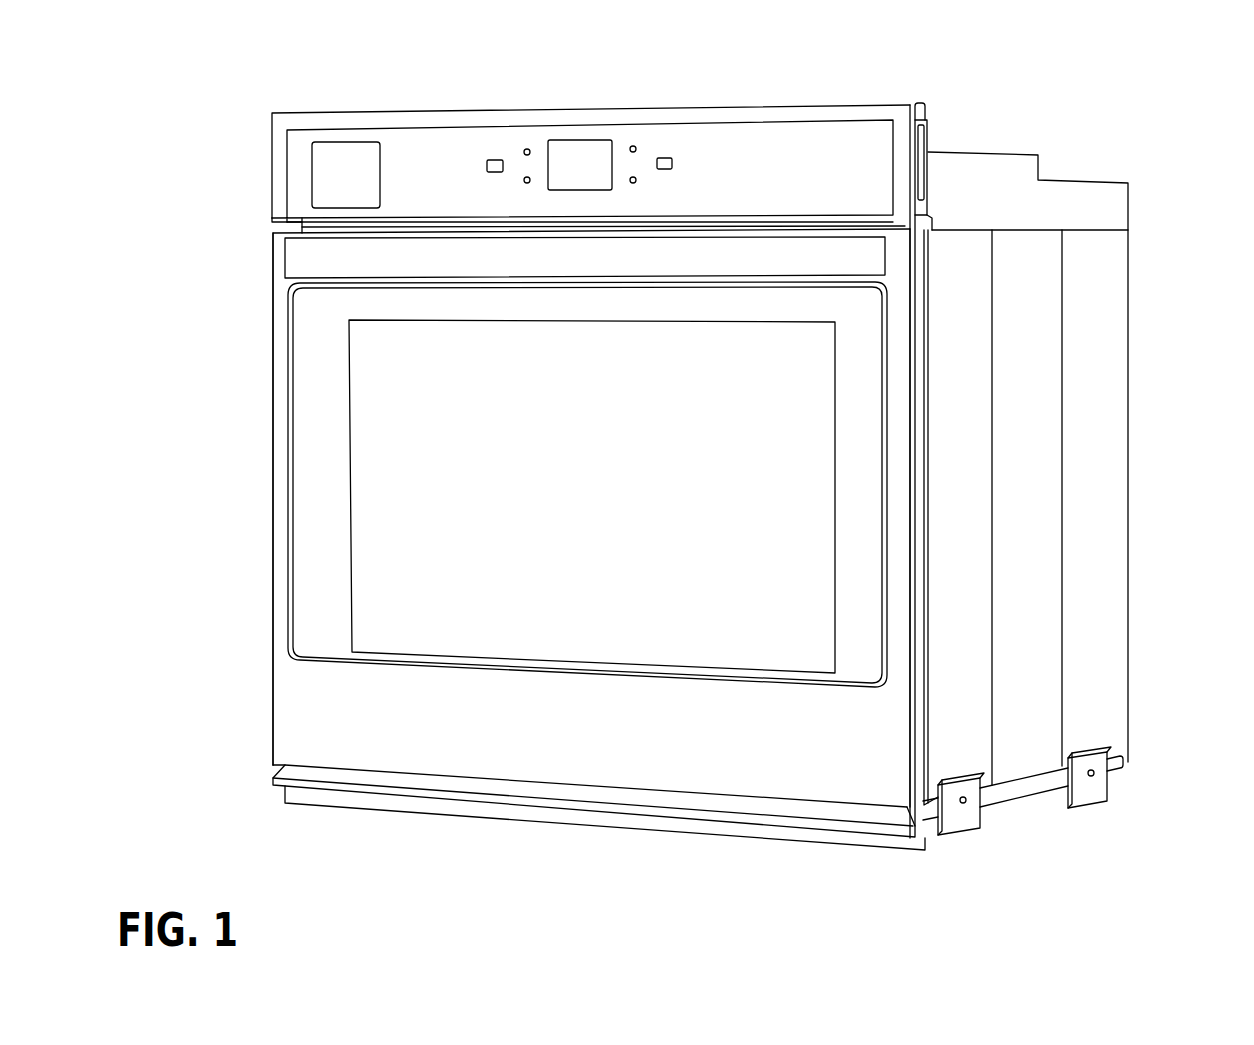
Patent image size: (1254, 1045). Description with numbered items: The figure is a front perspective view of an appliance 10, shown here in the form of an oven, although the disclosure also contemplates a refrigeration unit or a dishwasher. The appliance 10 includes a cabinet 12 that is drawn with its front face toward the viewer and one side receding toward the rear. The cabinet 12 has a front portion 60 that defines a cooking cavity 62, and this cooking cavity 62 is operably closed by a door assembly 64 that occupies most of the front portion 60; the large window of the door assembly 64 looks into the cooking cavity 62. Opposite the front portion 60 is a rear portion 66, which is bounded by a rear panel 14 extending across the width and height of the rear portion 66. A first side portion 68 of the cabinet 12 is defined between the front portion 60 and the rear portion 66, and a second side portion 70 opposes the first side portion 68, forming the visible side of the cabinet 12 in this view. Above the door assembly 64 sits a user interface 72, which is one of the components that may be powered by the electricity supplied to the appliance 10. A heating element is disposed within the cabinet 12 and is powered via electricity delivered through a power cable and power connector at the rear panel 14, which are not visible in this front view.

The appliance 10 is at (1018, 88).
The cabinet 12 is at (270, 272).
The rear panel 14 is at (1127, 364).
The front portion 60 is at (335, 727).
The cooking cavity 62 is at (405, 452).
The door assembly 64 is at (285, 358).
The rear portion 66 is at (1127, 460).
The first side portion 68 is at (267, 565).
The second side portion 70 is at (1068, 508).
The user interface 72 is at (571, 140).